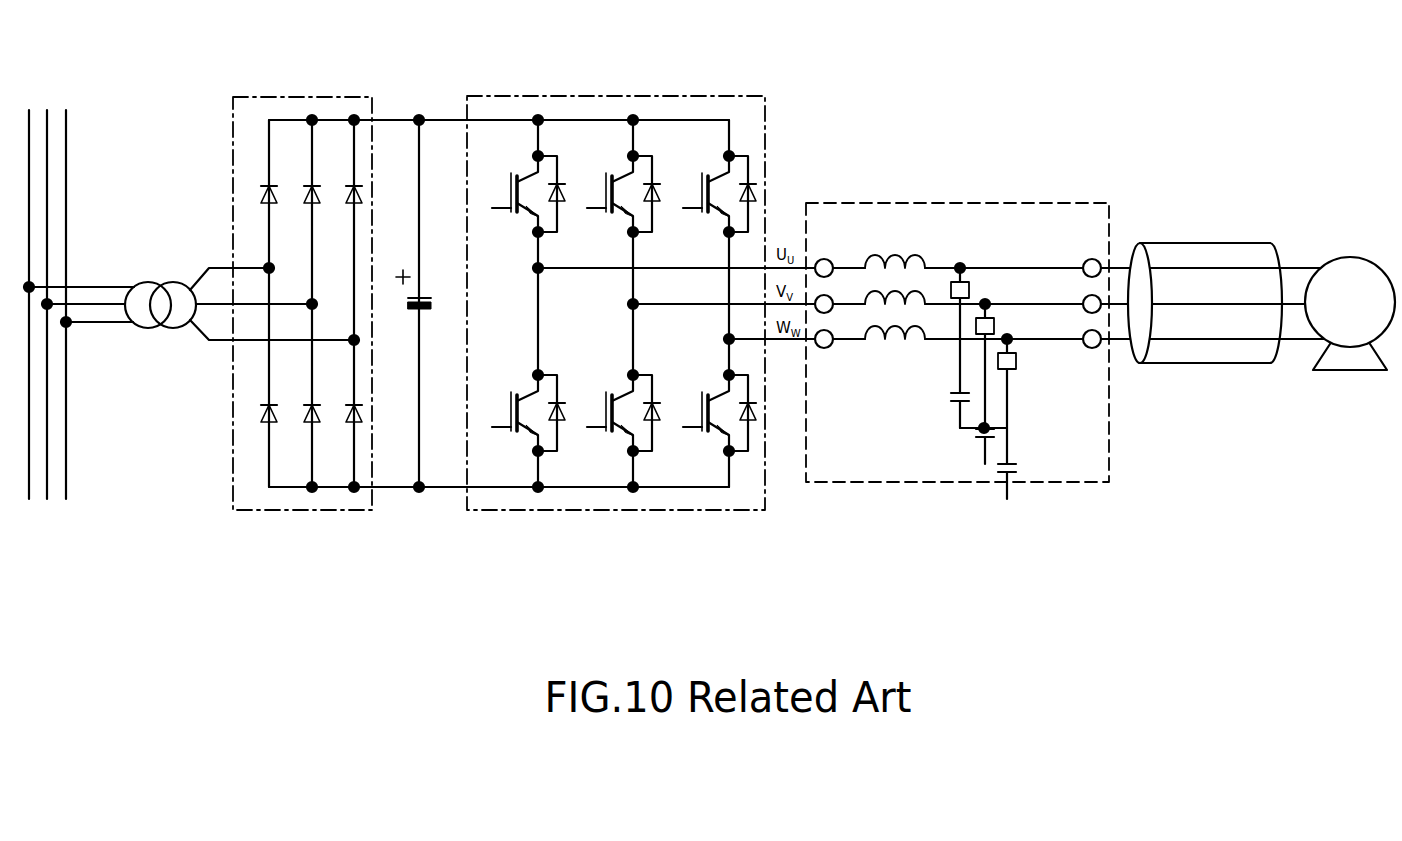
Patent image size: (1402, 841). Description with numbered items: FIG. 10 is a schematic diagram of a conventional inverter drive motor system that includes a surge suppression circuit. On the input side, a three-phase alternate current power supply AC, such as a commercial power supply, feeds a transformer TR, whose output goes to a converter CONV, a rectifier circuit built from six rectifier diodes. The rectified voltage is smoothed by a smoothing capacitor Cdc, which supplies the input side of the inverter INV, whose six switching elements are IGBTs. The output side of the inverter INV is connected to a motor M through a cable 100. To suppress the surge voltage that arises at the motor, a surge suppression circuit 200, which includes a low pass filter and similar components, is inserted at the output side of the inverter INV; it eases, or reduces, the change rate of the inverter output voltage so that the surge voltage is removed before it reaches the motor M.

The cable 100 is at (1197, 243).
The surge suppression circuit 200 is at (838, 201).
The three-phase alternate current power supply AC is at (27, 104).
The transformer TR is at (194, 298).
The converter CONV is at (268, 90).
The inverter INV is at (584, 90).
The smoothing capacitor Cdc is at (421, 303).
The motor M is at (1350, 313).